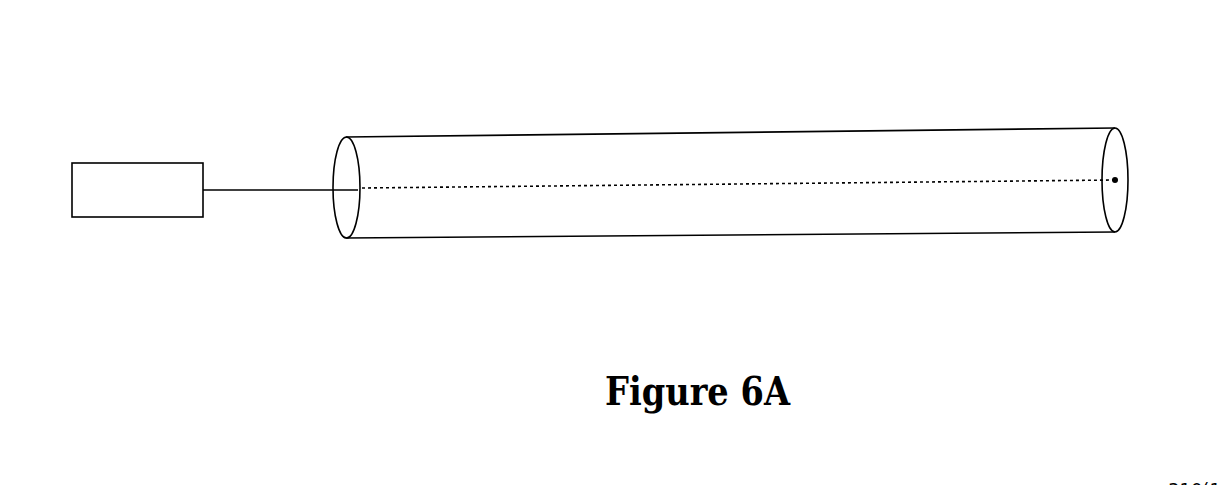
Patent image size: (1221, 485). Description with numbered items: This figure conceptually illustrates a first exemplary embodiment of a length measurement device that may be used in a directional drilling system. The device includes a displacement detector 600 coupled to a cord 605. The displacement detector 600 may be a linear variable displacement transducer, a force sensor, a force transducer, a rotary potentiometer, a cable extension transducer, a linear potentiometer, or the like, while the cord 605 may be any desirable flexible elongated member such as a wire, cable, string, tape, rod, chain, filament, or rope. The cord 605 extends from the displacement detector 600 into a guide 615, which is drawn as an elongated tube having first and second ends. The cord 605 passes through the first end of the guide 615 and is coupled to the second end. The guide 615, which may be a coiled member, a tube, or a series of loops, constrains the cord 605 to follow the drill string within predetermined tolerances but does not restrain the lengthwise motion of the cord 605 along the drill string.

The displacement detector 600 is at (156, 199).
The cord 605 is at (298, 192).
The guide 615 is at (948, 130).